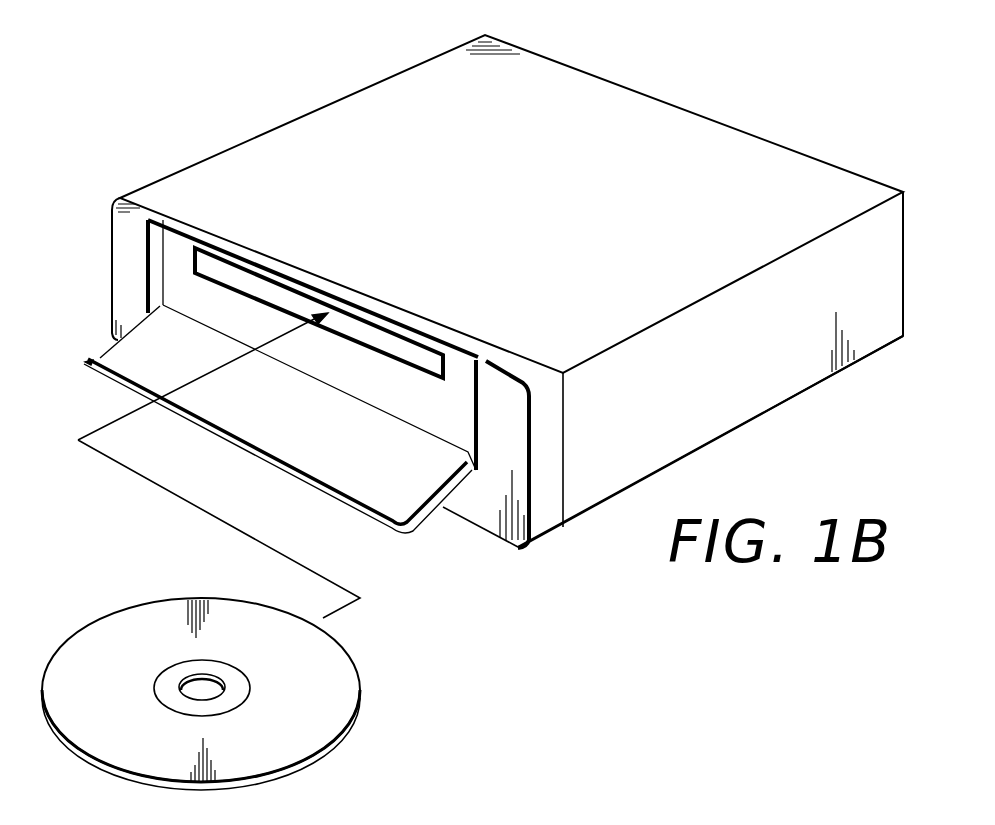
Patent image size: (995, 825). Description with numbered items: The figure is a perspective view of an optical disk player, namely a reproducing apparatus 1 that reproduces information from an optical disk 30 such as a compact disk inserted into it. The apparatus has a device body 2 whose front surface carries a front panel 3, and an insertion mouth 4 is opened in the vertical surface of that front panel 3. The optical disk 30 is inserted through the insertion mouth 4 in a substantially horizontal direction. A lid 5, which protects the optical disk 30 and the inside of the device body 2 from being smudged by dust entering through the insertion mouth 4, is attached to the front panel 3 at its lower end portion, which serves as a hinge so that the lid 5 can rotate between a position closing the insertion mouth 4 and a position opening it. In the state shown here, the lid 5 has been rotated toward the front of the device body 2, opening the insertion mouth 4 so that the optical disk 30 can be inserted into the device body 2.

The reproducing apparatus 1 is at (275, 111).
The device body 2 is at (215, 177).
The front panel 3 is at (497, 508).
The insertion mouth 4 is at (360, 328).
The lid 5 is at (277, 427).
The optical disk 30 is at (325, 705).